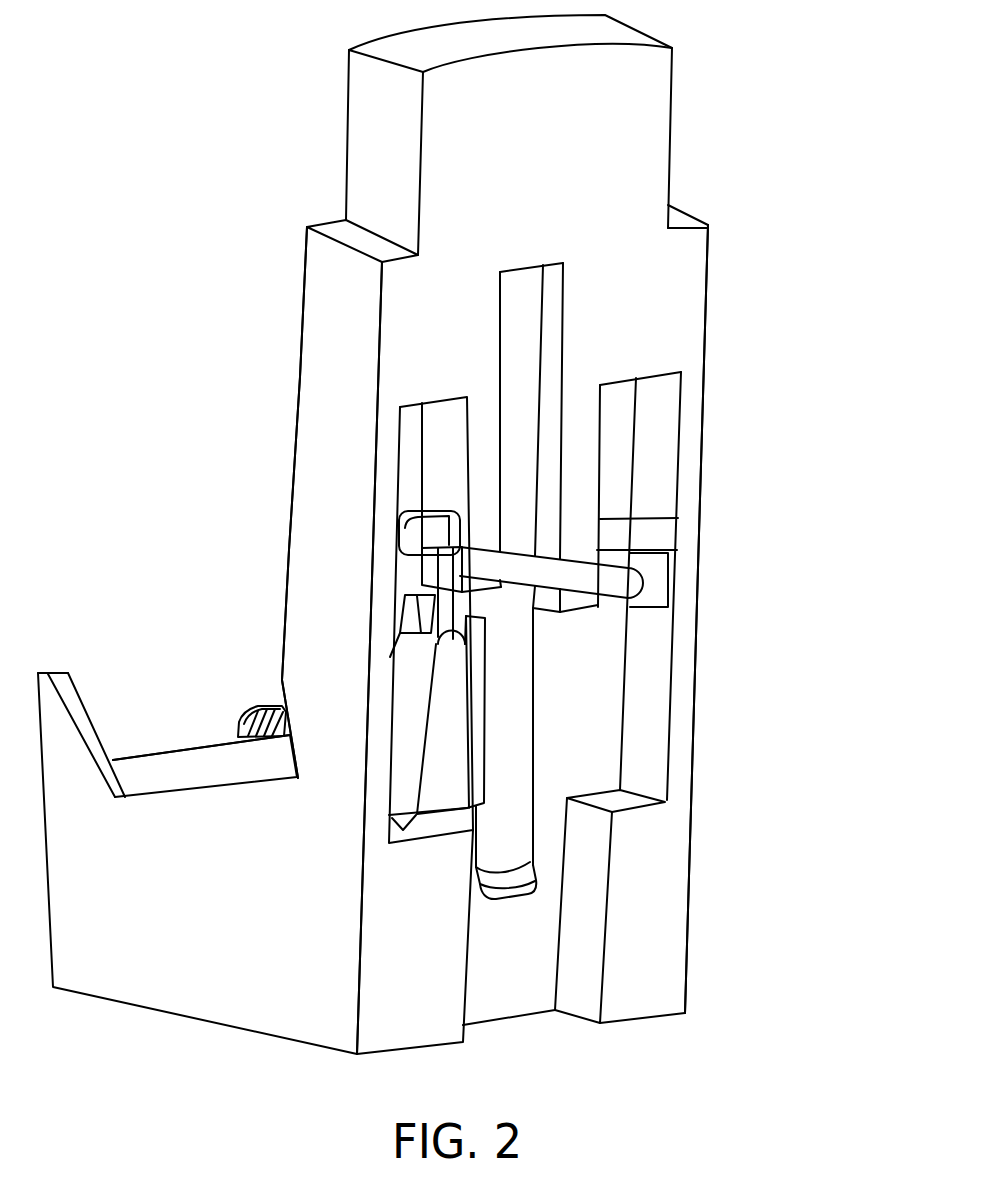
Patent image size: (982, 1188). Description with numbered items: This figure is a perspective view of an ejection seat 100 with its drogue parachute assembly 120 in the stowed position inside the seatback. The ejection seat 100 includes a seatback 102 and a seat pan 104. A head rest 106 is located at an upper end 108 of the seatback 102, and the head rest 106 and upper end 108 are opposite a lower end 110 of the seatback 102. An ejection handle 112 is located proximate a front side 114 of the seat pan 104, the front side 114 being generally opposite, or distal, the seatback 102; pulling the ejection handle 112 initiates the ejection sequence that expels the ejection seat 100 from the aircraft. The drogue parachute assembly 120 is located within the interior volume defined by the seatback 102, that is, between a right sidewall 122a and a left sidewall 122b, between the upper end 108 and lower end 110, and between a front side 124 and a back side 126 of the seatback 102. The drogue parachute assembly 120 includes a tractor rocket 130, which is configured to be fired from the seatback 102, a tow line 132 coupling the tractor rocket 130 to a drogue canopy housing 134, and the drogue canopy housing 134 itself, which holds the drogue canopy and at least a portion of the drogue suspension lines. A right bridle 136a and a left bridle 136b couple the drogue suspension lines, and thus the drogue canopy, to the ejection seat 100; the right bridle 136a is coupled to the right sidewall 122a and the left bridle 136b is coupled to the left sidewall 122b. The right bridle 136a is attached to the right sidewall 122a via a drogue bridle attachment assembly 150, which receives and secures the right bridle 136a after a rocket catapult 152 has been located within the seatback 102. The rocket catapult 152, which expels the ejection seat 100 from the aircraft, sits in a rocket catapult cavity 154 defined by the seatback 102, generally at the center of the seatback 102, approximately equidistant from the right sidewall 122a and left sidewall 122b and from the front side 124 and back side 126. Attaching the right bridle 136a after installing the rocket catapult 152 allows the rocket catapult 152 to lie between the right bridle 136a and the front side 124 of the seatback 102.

The ejection seat 100 is at (250, 182).
The seatback 102 is at (489, 621).
The seat pan 104 is at (202, 773).
The head rest 106 is at (643, 150).
The upper end 108 is at (330, 232).
The lower end 110 is at (197, 889).
The ejection handle 112 is at (267, 708).
The front side 114 is at (124, 755).
The drogue parachute assembly 120 is at (355, 541).
The right sidewall 122a is at (690, 660).
The left sidewall 122b is at (345, 383).
The front side 124 is at (303, 300).
The back side 126 is at (419, 345).
The tractor rocket 130 is at (423, 530).
The tow line 132 is at (423, 572).
The drogue canopy housing 134 is at (415, 724).
The right bridle 136a is at (573, 578).
The left bridle 136b is at (398, 622).
The drogue bridle attachment assembly 150 is at (652, 561).
The rocket catapult 152 is at (517, 752).
The rocket catapult cavity 154 is at (558, 339).